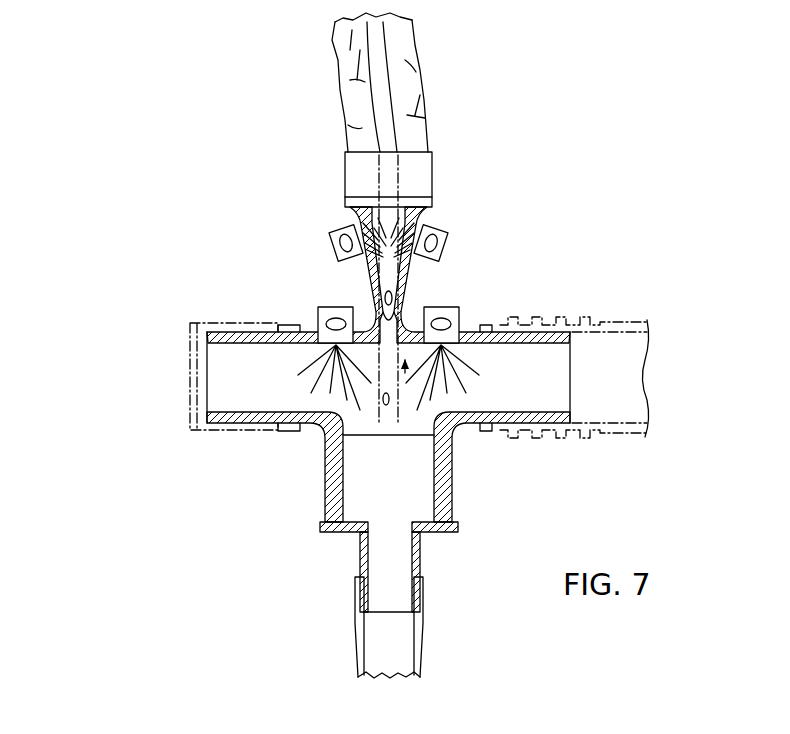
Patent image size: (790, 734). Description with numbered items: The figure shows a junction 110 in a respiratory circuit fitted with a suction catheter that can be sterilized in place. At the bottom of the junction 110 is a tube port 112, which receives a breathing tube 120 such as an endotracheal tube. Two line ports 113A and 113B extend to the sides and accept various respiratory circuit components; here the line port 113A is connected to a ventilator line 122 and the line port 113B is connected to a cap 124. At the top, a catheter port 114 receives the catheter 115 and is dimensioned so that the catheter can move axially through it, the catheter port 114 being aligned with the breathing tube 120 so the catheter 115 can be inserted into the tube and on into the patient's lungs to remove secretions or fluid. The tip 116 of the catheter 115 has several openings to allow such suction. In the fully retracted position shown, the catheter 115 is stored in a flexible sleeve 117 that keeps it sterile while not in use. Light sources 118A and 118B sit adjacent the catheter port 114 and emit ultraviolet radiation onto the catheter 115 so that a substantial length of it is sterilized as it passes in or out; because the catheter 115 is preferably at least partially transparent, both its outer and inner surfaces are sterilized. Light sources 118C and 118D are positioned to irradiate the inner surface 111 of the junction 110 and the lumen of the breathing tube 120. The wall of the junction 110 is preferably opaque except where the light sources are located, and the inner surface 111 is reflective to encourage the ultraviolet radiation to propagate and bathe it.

The junction 110 is at (455, 475).
The inner surface 111 is at (450, 410).
The tube port 112 is at (434, 541).
The line port 113A is at (602, 375).
The line port 113B is at (158, 351).
The catheter port 114 is at (404, 382).
The catheter 115 is at (393, 72).
The tip 116 is at (382, 338).
The flexible sleeve 117 is at (412, 35).
The light source 118A is at (328, 237).
The light source 118B is at (448, 237).
The light source 118C is at (322, 306).
The light source 118D is at (452, 306).
The breathing tube 120 is at (425, 606).
The ventilator line 122 is at (612, 320).
The cap 124 is at (190, 398).